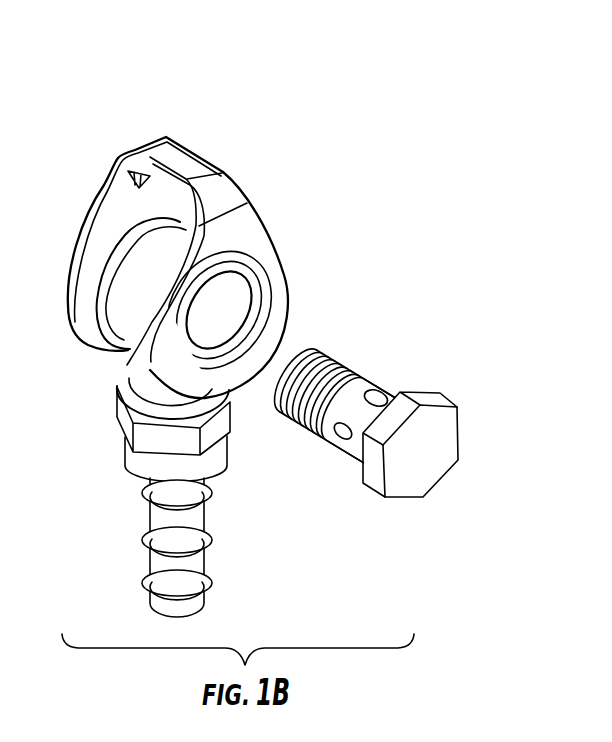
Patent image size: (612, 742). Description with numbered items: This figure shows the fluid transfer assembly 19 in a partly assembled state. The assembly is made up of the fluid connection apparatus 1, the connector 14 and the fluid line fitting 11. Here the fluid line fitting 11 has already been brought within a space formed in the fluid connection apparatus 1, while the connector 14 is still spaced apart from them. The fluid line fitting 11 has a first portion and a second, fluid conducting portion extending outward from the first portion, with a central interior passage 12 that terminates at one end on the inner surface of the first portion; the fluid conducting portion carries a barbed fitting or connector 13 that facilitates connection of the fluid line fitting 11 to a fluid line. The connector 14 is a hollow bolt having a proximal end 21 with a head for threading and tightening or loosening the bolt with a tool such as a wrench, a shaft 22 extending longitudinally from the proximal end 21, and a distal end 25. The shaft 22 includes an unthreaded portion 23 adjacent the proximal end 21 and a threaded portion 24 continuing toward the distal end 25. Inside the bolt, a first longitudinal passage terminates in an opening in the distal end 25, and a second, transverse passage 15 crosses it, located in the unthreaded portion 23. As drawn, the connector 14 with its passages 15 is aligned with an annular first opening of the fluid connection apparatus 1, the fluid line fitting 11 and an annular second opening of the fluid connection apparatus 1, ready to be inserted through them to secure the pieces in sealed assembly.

The fluid transfer assembly 19 is at (223, 104).
The fluid connection apparatus 1 is at (260, 195).
The fluid line fitting 11 is at (130, 325).
The central interior passage 12 is at (195, 338).
The barbed fitting or connector 13 is at (150, 517).
The connector 14 is at (357, 352).
The second passage 15 is at (368, 402).
The proximal end 21 is at (417, 455).
The shaft 22 is at (380, 355).
The unthreaded portion 23 is at (353, 395).
The threaded portion 24 is at (312, 398).
The distal end 25 is at (284, 364).